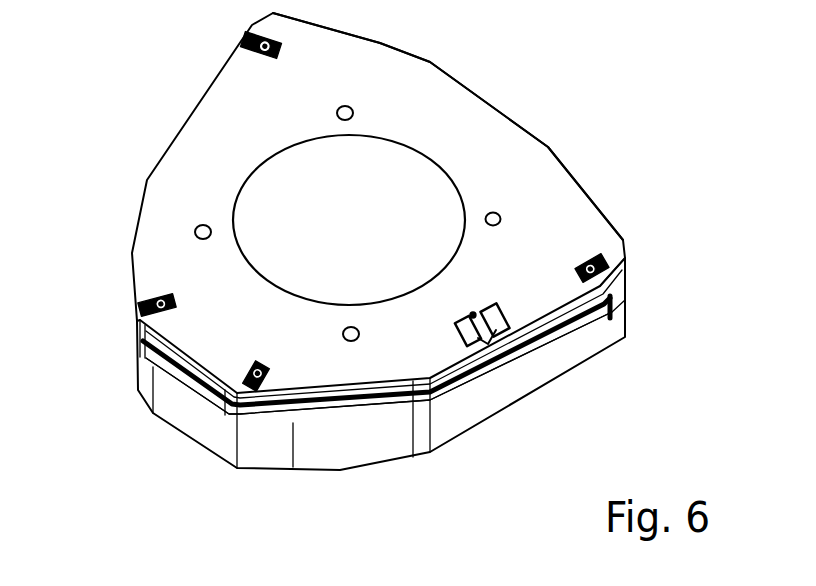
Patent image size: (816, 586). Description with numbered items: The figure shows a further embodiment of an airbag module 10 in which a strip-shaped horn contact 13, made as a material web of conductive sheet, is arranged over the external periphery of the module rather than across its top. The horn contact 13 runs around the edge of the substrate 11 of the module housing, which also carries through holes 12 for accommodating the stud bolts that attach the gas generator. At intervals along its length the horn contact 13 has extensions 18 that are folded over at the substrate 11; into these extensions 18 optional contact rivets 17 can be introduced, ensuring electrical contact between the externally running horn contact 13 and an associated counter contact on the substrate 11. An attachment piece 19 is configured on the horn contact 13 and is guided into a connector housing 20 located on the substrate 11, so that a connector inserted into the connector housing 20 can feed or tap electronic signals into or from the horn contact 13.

The airbag module 10 is at (537, 388).
The substrate 11 is at (576, 203).
The through holes 12 is at (500, 216).
The horn contacts 13 is at (562, 338).
The contact rivets 17 is at (593, 258).
The extensions 18 is at (621, 268).
The attachment piece 19 is at (490, 345).
The connector housing 20 is at (520, 340).